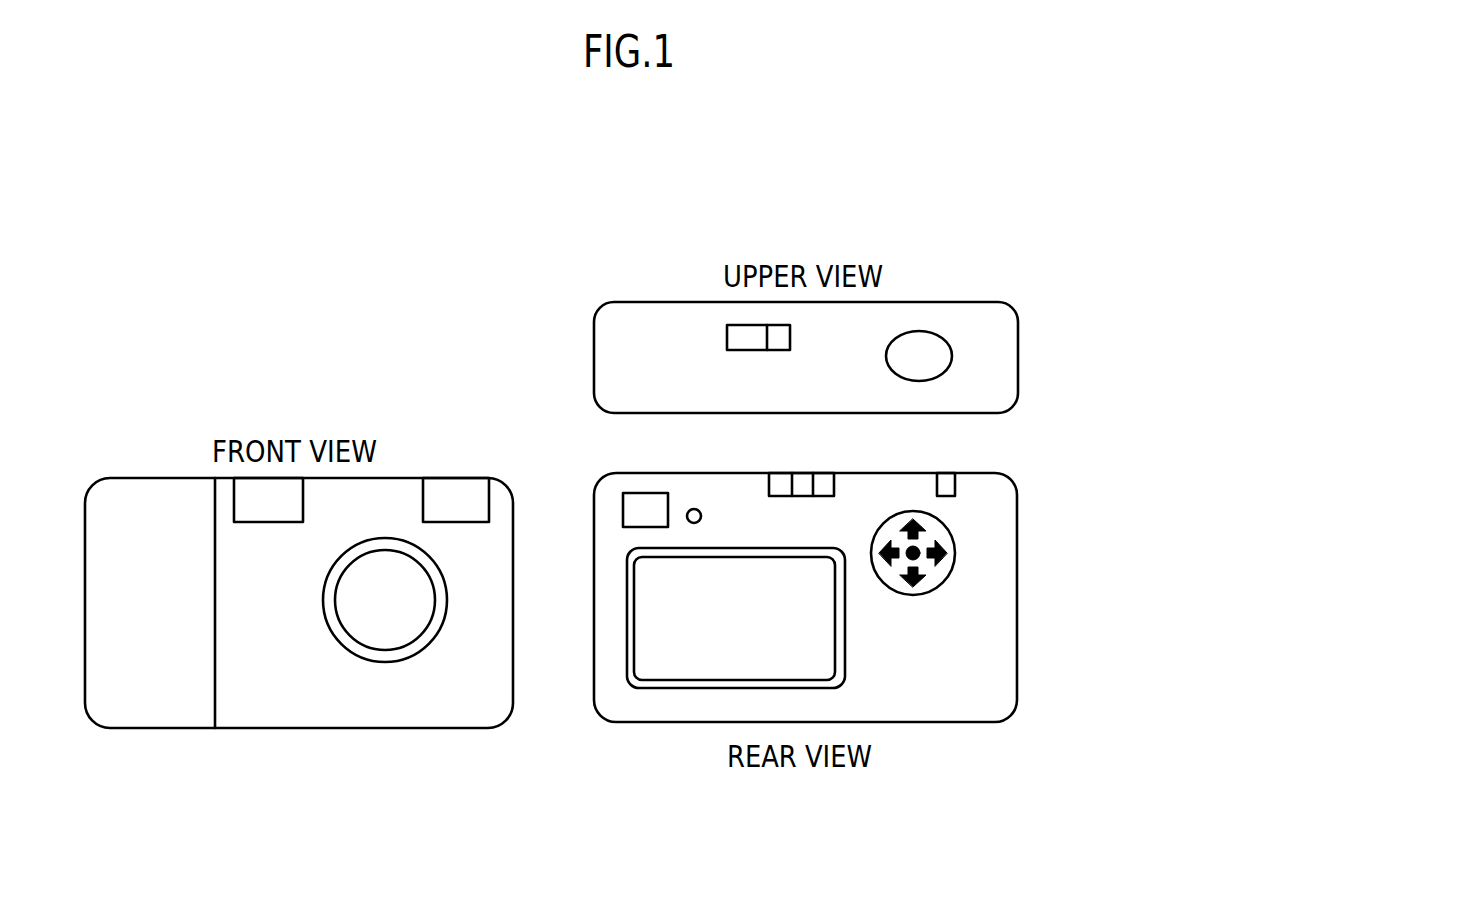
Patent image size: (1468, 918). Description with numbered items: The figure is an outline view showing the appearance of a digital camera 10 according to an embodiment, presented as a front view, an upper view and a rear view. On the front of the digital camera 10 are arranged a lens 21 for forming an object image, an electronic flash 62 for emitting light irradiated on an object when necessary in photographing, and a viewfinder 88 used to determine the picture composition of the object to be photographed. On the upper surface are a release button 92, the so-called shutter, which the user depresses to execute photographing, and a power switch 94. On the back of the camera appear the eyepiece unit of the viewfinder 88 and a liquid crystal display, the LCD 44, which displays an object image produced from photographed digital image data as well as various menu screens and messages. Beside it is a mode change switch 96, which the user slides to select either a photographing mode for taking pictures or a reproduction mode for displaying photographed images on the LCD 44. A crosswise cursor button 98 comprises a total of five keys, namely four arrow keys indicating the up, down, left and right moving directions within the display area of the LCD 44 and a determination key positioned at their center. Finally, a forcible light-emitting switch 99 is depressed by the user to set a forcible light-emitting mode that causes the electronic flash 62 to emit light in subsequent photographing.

The digital camera 10 is at (327, 237).
The electronic flash 62 is at (252, 492).
The viewfinder 88 is at (643, 497).
The lens 21 is at (370, 640).
The power switch 94 is at (742, 328).
The release button 92 is at (928, 347).
The mode change switch 96 is at (803, 473).
The forcible light-emitting switch 99 is at (953, 490).
The liquid crystal display 44 is at (714, 672).
The crosswise cursor button 98 is at (902, 595).